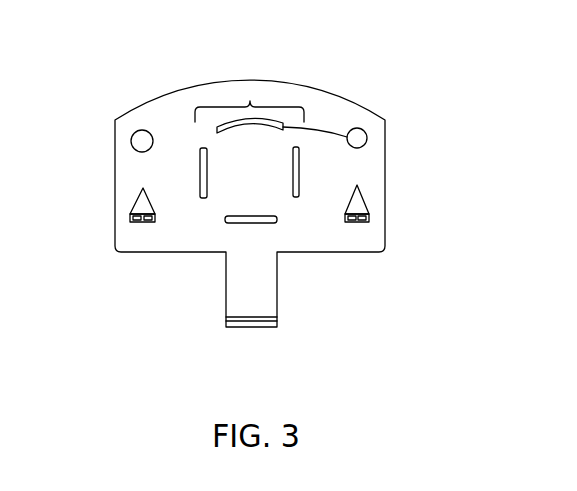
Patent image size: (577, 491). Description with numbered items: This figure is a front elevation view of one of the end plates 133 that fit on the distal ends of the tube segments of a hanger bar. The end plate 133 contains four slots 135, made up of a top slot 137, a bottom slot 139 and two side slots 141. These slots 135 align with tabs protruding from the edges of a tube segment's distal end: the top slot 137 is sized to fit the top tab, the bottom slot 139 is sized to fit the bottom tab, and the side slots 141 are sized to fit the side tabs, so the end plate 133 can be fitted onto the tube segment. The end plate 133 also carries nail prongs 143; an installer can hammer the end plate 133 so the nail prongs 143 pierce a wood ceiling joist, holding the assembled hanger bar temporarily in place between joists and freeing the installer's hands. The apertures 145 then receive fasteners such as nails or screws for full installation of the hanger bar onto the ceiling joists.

The end plate 133 is at (194, 288).
The slots 135 is at (250, 101).
The top slot 137 is at (364, 146).
The bottom slot 139 is at (262, 223).
The side slots 141 is at (205, 183).
The nail prongs 143 is at (141, 222).
The apertures 145 is at (367, 137).